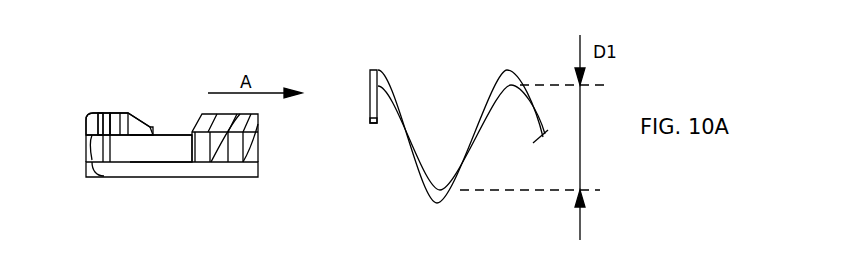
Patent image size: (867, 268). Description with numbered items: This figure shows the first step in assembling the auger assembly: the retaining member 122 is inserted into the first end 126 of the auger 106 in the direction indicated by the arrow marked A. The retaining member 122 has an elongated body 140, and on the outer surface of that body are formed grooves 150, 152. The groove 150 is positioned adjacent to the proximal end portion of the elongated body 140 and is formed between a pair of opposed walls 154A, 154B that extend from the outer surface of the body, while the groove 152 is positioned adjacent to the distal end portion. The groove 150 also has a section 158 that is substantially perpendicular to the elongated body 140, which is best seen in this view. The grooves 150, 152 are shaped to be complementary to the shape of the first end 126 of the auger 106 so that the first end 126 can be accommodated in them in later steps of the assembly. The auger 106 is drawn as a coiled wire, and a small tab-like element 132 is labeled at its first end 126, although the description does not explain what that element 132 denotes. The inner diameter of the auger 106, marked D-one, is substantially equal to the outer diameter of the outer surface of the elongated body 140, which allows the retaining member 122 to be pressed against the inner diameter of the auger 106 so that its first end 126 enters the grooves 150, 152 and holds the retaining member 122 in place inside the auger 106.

The auger 106 is at (440, 87).
The retaining member 122 is at (173, 113).
The first end 126 is at (370, 102).
The spring end portion 132 is at (375, 82).
The elongated body 140 is at (155, 155).
The groove 150 is at (107, 113).
The groove 152 is at (223, 155).
The opposed wall 154A is at (100, 112).
The opposed wall 154B is at (120, 112).
The section 158 is at (105, 148).